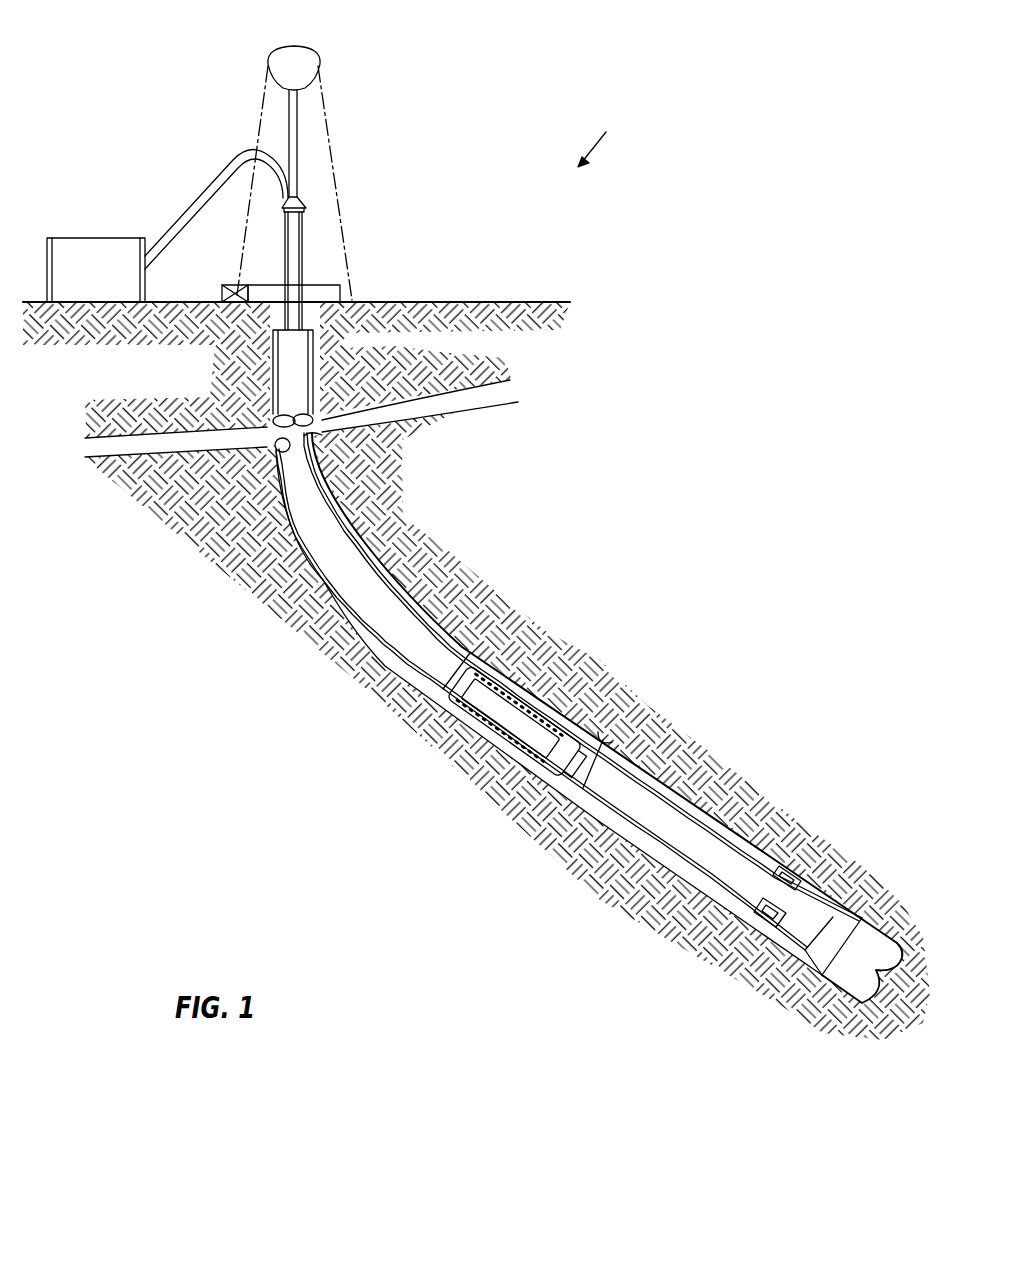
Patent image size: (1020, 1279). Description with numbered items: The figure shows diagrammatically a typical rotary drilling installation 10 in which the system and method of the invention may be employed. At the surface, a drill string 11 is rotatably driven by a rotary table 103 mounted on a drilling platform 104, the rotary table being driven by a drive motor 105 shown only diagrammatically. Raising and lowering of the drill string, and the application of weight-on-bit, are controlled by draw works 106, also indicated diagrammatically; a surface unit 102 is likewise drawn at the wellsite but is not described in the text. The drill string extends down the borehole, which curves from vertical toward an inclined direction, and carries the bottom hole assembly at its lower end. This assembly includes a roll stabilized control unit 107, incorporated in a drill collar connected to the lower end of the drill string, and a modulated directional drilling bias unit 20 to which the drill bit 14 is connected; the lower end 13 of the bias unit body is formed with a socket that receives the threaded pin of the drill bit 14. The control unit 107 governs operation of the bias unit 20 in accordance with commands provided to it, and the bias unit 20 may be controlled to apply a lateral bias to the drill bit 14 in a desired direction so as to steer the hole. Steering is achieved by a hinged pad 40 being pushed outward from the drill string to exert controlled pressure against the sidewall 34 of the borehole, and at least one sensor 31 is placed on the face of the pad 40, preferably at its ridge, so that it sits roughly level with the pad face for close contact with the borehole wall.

The rotary drilling installation 10 is at (610, 136).
The drill string 11 is at (362, 560).
The lower end of the body structure 13 is at (840, 927).
The drill bit 14 is at (820, 995).
The modulated bias unit 20 is at (665, 836).
The sensor 31 is at (797, 873).
The sidewall 34 is at (618, 740).
The hinged pad 40 is at (800, 888).
The surface tank 102 is at (92, 253).
The rotary table 103 is at (273, 288).
The drilling platform 104 is at (355, 290).
The drive motor 105 is at (222, 298).
The draw works 106 is at (281, 55).
The roll stabilized control unit 107 is at (512, 705).